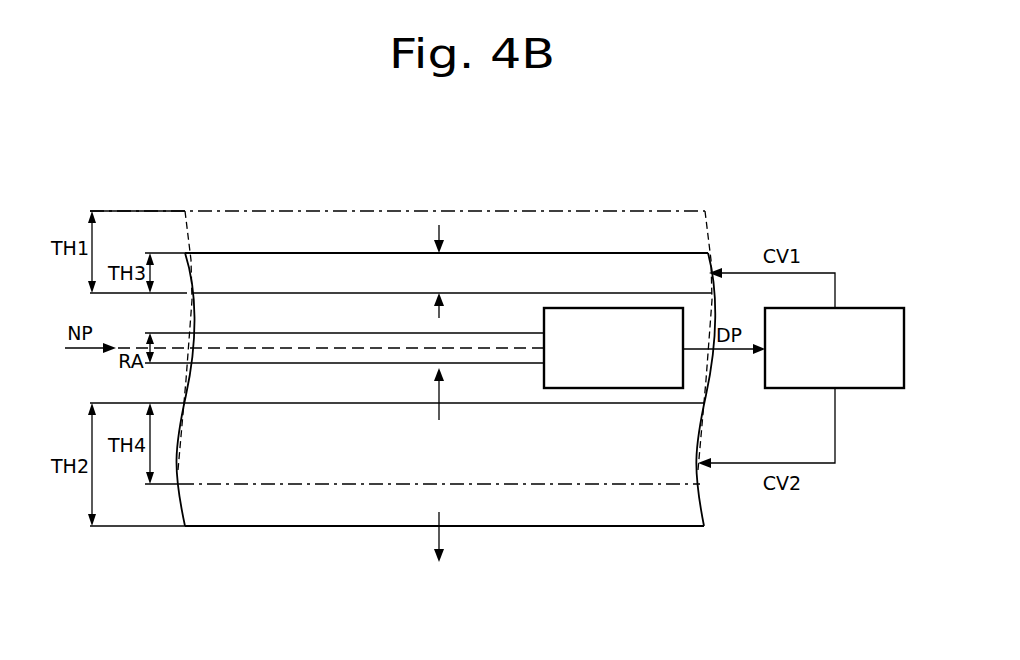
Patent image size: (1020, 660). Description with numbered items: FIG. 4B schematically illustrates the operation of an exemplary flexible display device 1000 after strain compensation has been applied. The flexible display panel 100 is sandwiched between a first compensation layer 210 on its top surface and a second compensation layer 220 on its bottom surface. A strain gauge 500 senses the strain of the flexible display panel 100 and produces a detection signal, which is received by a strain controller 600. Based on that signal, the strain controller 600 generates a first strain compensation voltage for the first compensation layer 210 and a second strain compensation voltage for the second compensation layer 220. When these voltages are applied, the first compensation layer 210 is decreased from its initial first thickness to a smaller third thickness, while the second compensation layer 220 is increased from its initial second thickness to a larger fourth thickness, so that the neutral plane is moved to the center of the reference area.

The flexible display device 1000 is at (666, 173).
The flexible display panel 100 is at (483, 308).
The first compensation layer 210 is at (597, 266).
The second compensation layer 220 is at (513, 517).
The strain gauge 500 is at (635, 389).
The strain controller 600 is at (879, 306).